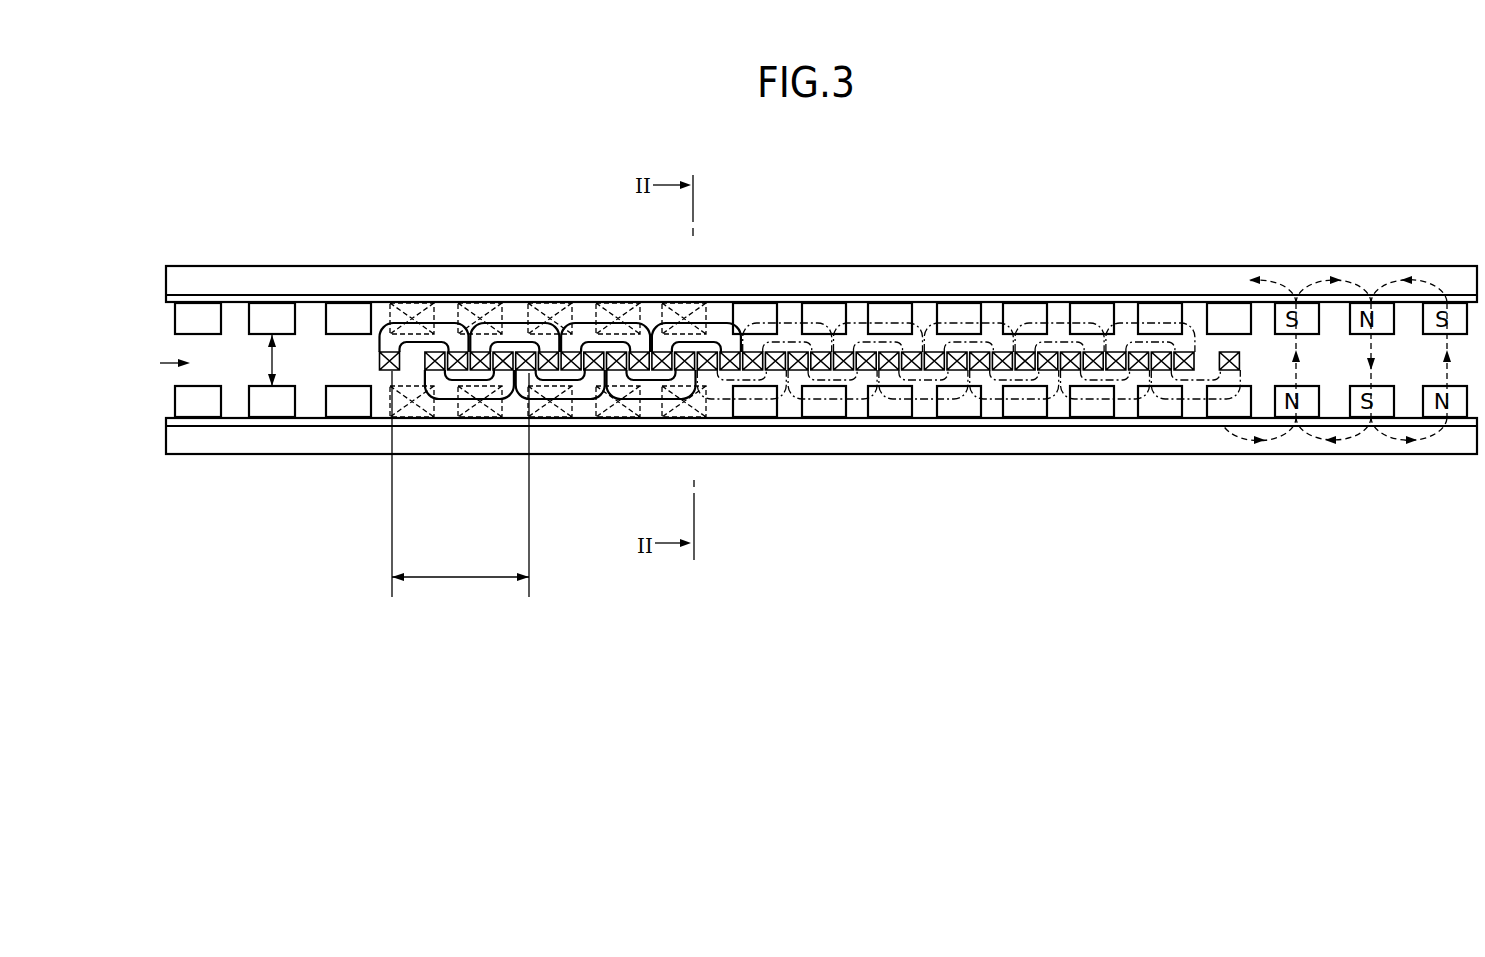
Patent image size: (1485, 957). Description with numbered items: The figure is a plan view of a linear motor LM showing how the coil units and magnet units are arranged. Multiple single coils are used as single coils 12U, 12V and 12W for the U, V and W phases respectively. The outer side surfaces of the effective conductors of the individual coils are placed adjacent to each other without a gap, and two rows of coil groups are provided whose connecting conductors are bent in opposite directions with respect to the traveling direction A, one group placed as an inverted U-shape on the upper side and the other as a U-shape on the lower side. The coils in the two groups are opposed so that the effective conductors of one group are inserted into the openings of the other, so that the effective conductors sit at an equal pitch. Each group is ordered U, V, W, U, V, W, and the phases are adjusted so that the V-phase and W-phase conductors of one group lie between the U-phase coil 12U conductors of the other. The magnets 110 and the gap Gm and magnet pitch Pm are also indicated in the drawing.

The permanent magnet 110 is at (343, 318).
The single coil for U phase 12U is at (442, 333).
The single coil for V phase 12V is at (513, 333).
The single coil for W phase 12W is at (582, 333).
The linear motor LM is at (1149, 242).
The magnetic gap Gm is at (294, 360).
The magnet pitch Pm is at (460, 484).
The traveling direction A is at (163, 364).